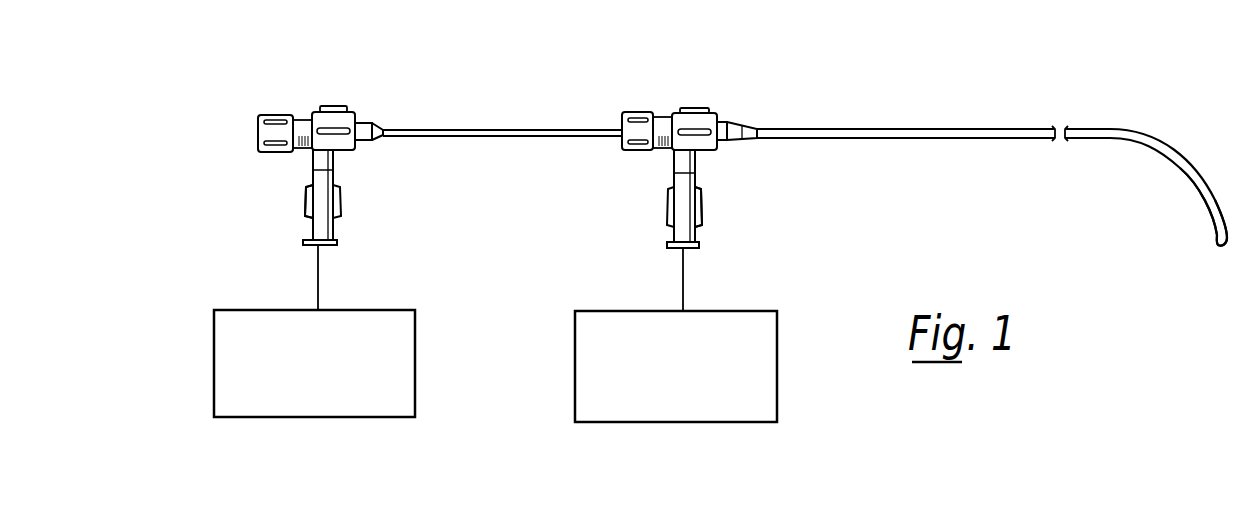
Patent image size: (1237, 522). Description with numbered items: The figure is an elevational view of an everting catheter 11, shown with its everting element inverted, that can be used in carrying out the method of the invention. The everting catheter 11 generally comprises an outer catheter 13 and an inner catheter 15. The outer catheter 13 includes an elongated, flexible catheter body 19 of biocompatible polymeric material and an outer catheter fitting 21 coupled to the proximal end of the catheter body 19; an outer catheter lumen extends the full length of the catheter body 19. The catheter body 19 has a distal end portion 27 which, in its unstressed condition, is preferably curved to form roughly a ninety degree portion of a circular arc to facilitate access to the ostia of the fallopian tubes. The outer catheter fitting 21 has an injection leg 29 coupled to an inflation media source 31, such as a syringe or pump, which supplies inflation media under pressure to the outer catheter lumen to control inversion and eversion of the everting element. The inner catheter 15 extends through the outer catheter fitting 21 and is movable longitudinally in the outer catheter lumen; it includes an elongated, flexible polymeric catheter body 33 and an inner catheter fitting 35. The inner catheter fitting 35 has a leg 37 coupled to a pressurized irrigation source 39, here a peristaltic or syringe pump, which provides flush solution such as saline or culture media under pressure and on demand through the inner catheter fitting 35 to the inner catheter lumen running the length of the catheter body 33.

The everting catheter 11 is at (486, 90).
The outer catheter 13 is at (899, 130).
The inner catheter 15 is at (549, 130).
The catheter body 19 is at (813, 127).
The outer catheter fitting 21 is at (698, 110).
The distal end portion 27 is at (1190, 160).
The injection leg 29 is at (692, 180).
The inflation media source 31 is at (762, 392).
The catheter body 33 is at (438, 130).
The inner catheter fitting 35 is at (335, 110).
The leg 37 is at (338, 208).
The pressurized irrigation source 39 is at (414, 403).